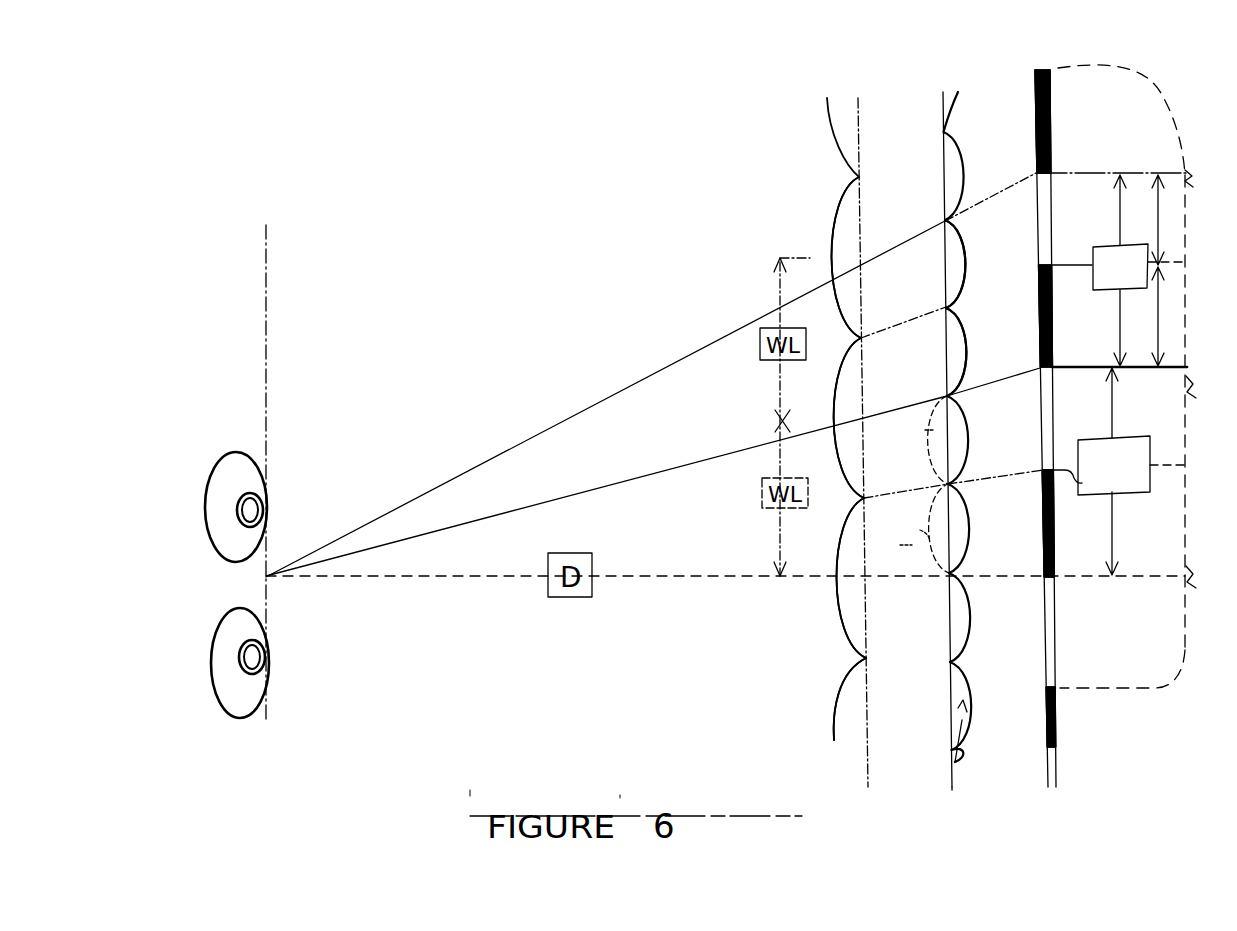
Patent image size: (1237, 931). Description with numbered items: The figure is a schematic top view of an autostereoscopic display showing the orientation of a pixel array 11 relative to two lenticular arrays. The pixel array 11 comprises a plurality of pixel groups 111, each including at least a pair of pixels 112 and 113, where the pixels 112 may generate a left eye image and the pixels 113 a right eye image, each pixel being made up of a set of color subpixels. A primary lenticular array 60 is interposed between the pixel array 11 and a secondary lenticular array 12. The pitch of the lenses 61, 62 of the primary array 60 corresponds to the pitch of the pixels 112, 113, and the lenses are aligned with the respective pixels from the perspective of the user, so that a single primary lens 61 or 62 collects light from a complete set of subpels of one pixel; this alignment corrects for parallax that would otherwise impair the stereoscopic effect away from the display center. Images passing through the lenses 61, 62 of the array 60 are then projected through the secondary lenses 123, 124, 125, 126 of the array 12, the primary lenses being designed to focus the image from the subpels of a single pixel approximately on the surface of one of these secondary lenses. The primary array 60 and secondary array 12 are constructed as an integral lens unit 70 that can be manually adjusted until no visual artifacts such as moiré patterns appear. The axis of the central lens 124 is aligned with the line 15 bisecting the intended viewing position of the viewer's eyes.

The pixel array 11 is at (1062, 78).
The lenticular array 12 is at (858, 84).
The line 15 is at (452, 581).
The lenticular array 60 is at (960, 80).
The lens 61 is at (964, 280).
The lens 62 is at (966, 378).
The integral lens unit 70 is at (928, 780).
The pixel group 111 is at (1131, 130).
The pixel 112 is at (1032, 350).
The pixel 113 is at (1032, 250).
The secondary lens 123 is at (862, 718).
The central lens 124 is at (868, 608).
The secondary lens 125 is at (866, 452).
The secondary lens 126 is at (864, 300).